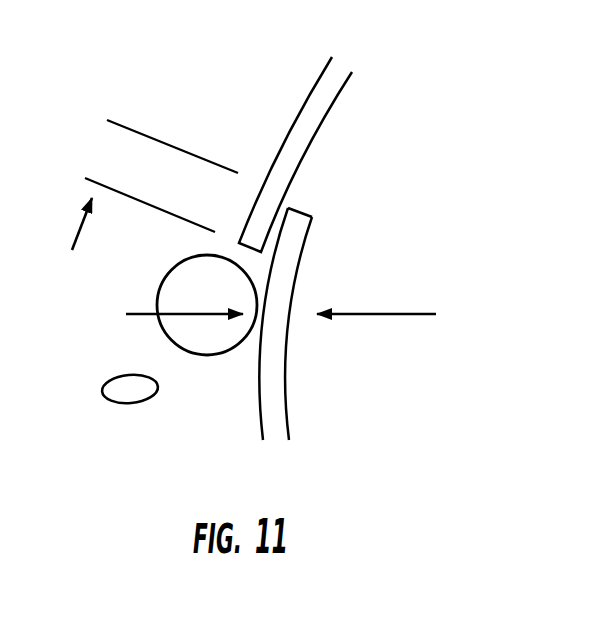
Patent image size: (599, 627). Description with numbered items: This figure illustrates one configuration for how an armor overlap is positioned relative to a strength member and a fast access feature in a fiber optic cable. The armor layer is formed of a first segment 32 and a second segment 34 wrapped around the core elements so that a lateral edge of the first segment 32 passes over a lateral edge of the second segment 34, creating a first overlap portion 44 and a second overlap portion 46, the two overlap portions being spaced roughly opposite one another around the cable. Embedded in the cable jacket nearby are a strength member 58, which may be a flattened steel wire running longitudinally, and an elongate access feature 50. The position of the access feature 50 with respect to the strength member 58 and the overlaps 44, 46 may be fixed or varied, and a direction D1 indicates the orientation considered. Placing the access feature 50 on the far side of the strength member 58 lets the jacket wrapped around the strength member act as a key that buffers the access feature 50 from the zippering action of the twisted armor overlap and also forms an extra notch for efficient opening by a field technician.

The first segment 32 is at (300, 113).
The second segment 34 is at (278, 416).
The first overlap portion 44 is at (362, 207).
The second overlap portion 46 is at (322, 237).
The access feature 50 is at (118, 388).
The strength member 58 is at (185, 293).
The flow direction D1 is at (125, 113).